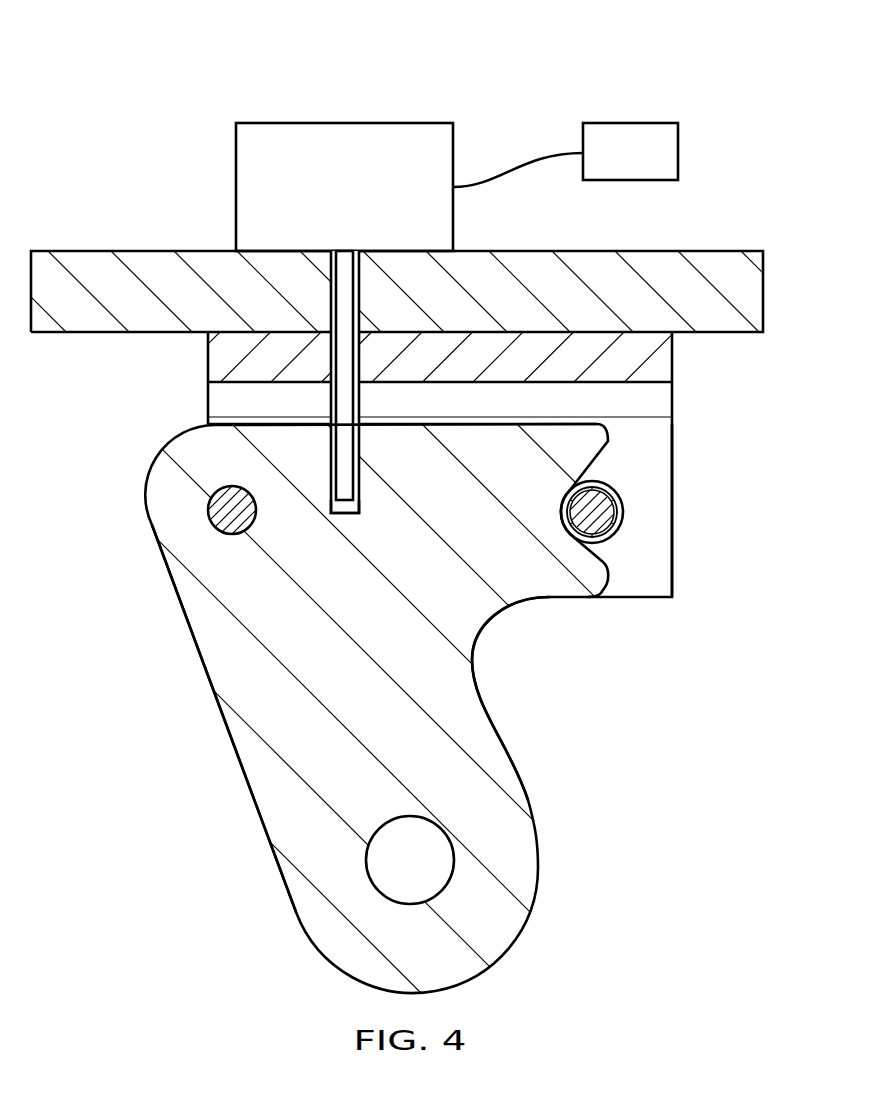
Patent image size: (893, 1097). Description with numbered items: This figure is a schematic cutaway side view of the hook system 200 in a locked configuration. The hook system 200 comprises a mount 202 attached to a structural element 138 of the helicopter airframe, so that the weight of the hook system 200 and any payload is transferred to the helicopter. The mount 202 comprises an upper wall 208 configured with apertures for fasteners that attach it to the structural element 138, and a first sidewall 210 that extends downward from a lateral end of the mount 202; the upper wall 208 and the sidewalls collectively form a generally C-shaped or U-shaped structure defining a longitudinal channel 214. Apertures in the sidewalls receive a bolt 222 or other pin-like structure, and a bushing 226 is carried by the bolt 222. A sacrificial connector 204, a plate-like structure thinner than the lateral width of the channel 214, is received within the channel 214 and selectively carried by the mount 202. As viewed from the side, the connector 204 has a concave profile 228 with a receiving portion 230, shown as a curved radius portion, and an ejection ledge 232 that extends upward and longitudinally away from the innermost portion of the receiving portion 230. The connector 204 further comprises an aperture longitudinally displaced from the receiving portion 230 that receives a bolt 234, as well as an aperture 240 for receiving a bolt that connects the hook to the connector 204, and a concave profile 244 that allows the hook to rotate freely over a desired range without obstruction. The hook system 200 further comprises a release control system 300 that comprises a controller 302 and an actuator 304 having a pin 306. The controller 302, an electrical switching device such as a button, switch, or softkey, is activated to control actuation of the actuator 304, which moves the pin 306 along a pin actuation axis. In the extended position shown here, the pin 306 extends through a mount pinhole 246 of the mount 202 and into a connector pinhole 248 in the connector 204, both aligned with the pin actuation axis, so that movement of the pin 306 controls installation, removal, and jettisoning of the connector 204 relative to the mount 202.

The structural element 138 is at (718, 260).
The hook system 200 is at (446, 593).
The mount 202 is at (208, 398).
The sacrificial connector 204 is at (223, 742).
The upper wall 208 is at (459, 464).
The first sidewall 210 is at (660, 427).
The longitudinal channel 214 is at (650, 448).
The bolt 222 is at (610, 517).
The bushing 226 is at (615, 497).
The concave profile 228 is at (630, 476).
The receiving portion 230 is at (615, 521).
The ejection ledge 232 is at (597, 468).
The bolt 234 is at (211, 521).
The aperture 240 is at (378, 882).
The concave profile 244 is at (490, 633).
The mount pinhole 246 is at (343, 262).
The connector pinhole 248 is at (335, 514).
The release control system 300 is at (418, 127).
The controller 302 is at (630, 122).
The actuator 304 is at (236, 183).
The pin 306 is at (347, 282).